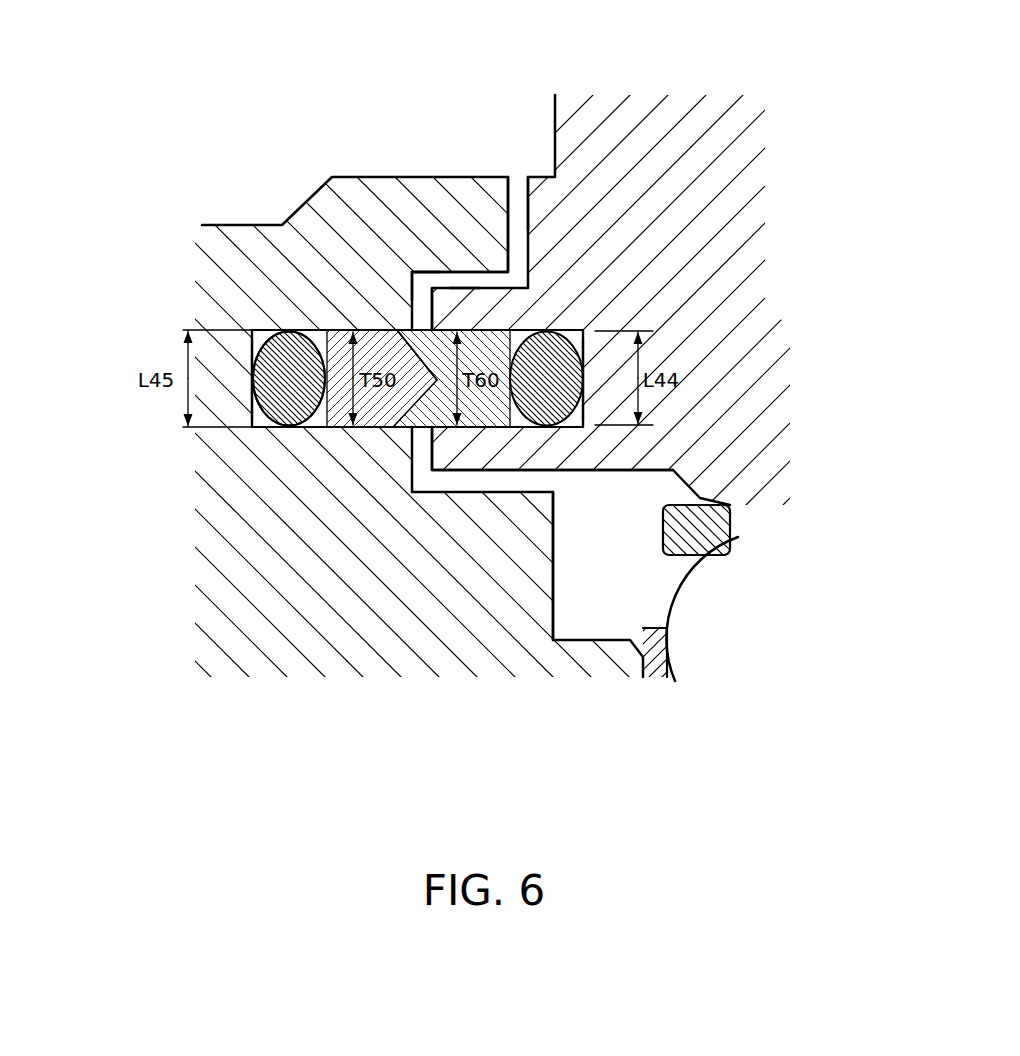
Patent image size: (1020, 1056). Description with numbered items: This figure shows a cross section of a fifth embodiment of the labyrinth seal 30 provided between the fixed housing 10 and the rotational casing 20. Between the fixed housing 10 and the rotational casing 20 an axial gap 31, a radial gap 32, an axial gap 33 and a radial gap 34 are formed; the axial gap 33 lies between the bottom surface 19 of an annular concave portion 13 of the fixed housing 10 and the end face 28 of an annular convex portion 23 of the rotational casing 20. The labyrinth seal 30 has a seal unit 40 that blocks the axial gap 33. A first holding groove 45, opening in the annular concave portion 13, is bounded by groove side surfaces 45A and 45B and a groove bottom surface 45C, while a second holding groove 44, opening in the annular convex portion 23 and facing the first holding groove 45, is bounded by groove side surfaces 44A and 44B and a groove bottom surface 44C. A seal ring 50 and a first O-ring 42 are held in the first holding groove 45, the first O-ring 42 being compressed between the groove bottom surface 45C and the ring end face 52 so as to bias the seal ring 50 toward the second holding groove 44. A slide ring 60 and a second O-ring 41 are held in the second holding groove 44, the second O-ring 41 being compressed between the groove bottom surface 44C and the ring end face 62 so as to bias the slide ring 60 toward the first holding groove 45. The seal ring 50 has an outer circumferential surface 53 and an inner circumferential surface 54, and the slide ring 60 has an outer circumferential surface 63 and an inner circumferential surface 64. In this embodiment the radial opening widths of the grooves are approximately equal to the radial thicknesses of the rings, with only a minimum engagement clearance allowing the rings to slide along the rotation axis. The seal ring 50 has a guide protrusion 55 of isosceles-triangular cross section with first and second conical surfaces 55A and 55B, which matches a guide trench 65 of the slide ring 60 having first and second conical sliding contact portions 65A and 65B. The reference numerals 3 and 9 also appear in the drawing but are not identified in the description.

The shaft 3 is at (746, 675).
The bore 9 is at (592, 596).
The fixed housing 10 is at (206, 224).
The annular concave portion 13 is at (424, 277).
The bottom surface 19 is at (420, 288).
The rotational casing 20 is at (752, 96).
The annular convex portion 23 is at (527, 458).
The end face 28 is at (438, 377).
The labyrinth seal 30 is at (538, 55).
The axial gap 31 is at (515, 197).
The radial gap 32 is at (463, 282).
The axial gap 33 is at (457, 328).
The radial gap 34 is at (500, 490).
The seal unit 40 is at (258, 448).
The second O-ring 41 is at (564, 428).
The first O-ring 42 is at (295, 376).
The second holding groove 44 is at (852, 330).
The groove side surface 44A is at (583, 340).
The groove side surface 44B is at (558, 432).
The groove bottom surface 44C is at (581, 413).
The first holding groove 45 is at (64, 318).
The groove side surface 45A is at (252, 335).
The groove side surface 45B is at (251, 420).
The groove bottom surface 45C is at (252, 360).
The seal ring 50 is at (253, 770).
The ring end face 52 is at (313, 428).
The outer circumferential surface 53 is at (346, 322).
The inner circumferential surface 54 is at (367, 428).
The guide protrusion 55 is at (498, 740).
The first conical surface 55A is at (445, 428).
The second conical surface 55B is at (405, 428).
The slide ring 60 is at (838, 150).
The ring end face 62 is at (507, 328).
The outer circumferential surface 63 is at (493, 328).
The inner circumferential surface 64 is at (560, 330).
The guide trench 65 is at (797, 158).
The first sliding contact portion 65A is at (468, 328).
The second sliding contact portion 65B is at (478, 328).